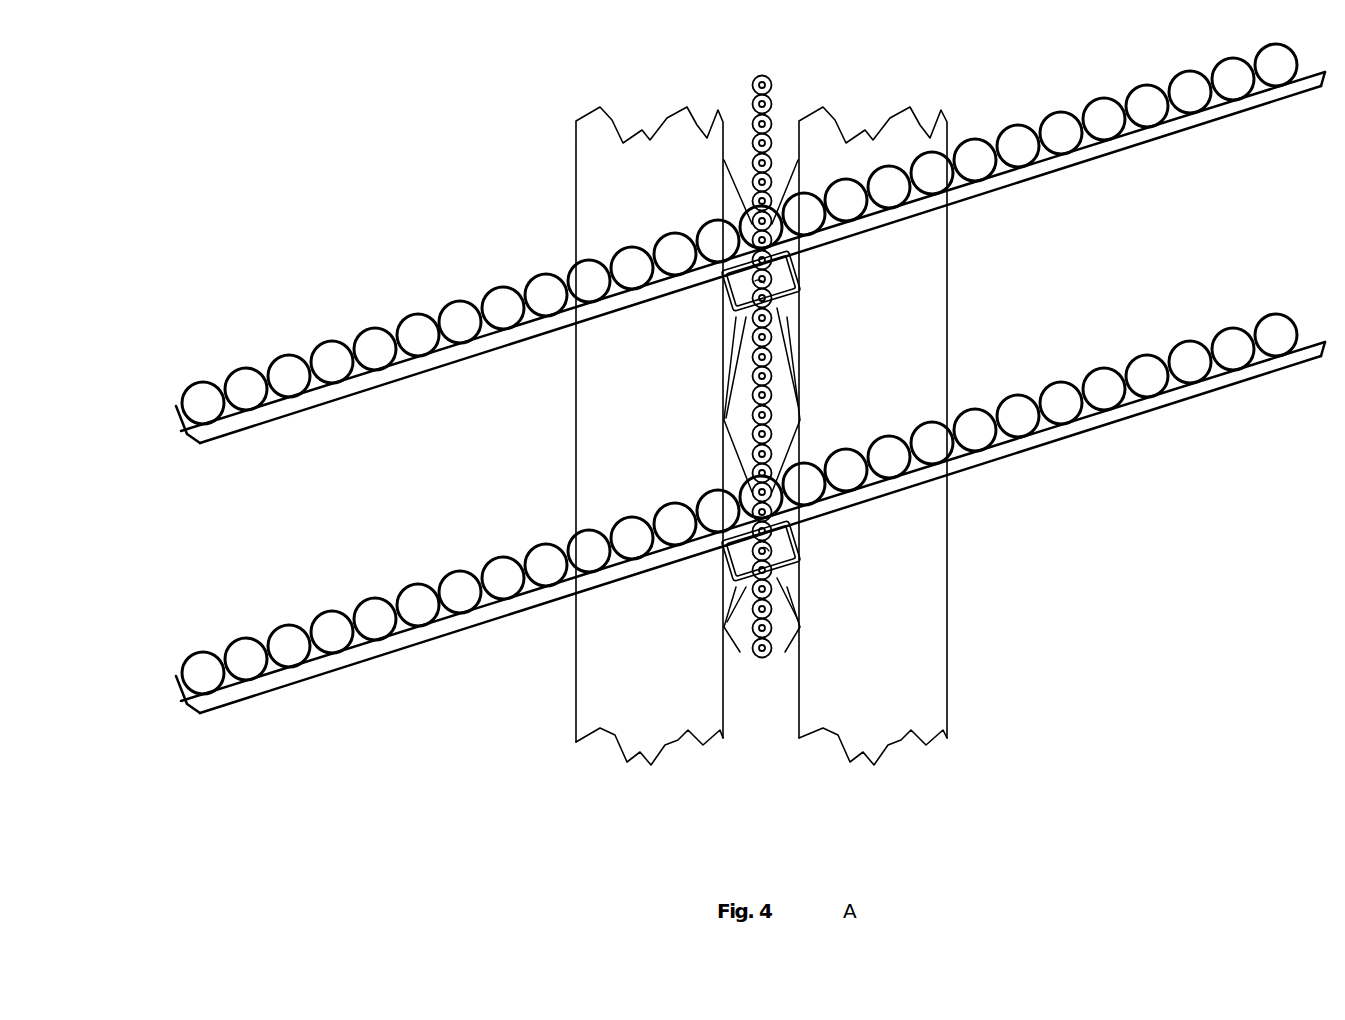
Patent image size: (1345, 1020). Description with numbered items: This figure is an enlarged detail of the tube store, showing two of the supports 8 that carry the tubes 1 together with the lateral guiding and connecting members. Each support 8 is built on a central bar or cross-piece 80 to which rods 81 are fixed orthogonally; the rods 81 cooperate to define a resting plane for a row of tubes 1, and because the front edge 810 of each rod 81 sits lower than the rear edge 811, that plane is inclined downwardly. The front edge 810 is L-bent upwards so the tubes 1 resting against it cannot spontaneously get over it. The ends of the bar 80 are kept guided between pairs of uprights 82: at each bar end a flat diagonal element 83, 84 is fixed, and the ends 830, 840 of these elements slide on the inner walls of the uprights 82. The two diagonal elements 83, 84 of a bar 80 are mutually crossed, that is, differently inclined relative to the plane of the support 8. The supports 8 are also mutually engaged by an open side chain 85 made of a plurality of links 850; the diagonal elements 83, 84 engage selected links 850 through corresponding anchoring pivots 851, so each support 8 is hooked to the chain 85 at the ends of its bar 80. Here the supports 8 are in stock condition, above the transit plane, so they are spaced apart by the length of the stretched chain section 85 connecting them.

The tube 1 is at (456, 300).
The support 8 is at (1080, 193).
The central bar 80 is at (807, 277).
The rod 81 is at (405, 372).
The front edge 810 is at (176, 410).
The rear edge 811 is at (1333, 80).
The upright 82 is at (590, 712).
The diagonal element 83 is at (788, 345).
The diagonal element 84 is at (733, 357).
The end of diagonal element 830 is at (722, 183).
The end of diagonal element 840 is at (803, 175).
The side chain 85 is at (792, 88).
The link 850 is at (752, 117).
The anchoring pivot 851 is at (753, 283).